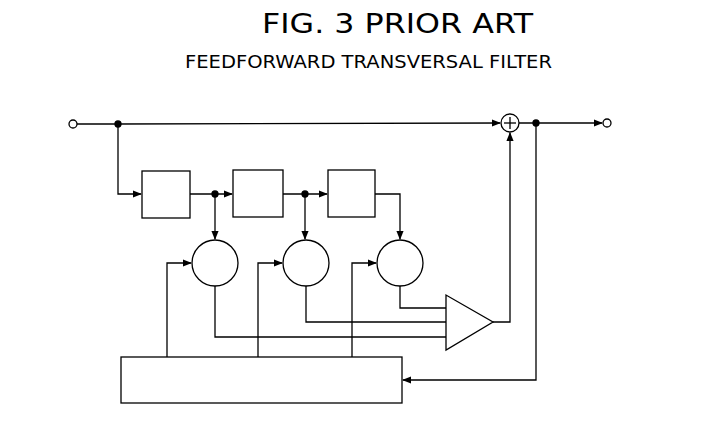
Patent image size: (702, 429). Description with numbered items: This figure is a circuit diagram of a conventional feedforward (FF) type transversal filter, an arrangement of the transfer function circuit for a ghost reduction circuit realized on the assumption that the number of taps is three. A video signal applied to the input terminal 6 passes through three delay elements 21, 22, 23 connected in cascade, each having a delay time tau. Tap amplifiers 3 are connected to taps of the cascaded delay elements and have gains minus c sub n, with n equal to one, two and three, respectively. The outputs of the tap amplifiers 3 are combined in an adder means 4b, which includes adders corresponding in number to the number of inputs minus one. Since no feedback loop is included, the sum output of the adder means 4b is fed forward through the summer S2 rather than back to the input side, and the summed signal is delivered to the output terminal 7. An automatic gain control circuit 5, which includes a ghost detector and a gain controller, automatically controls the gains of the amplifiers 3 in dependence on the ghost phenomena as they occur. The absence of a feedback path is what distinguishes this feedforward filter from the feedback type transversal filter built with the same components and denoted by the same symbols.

The input terminal 6 is at (76, 128).
The delay element 21 is at (157, 171).
The delay element 22 is at (249, 170).
The delay element 23 is at (344, 170).
The tap amplifiers 3 is at (194, 252).
The adder means 4b is at (470, 338).
The summer S2 is at (516, 114).
The output terminal 7 is at (604, 127).
The automatic gain control circuit 5 is at (133, 357).